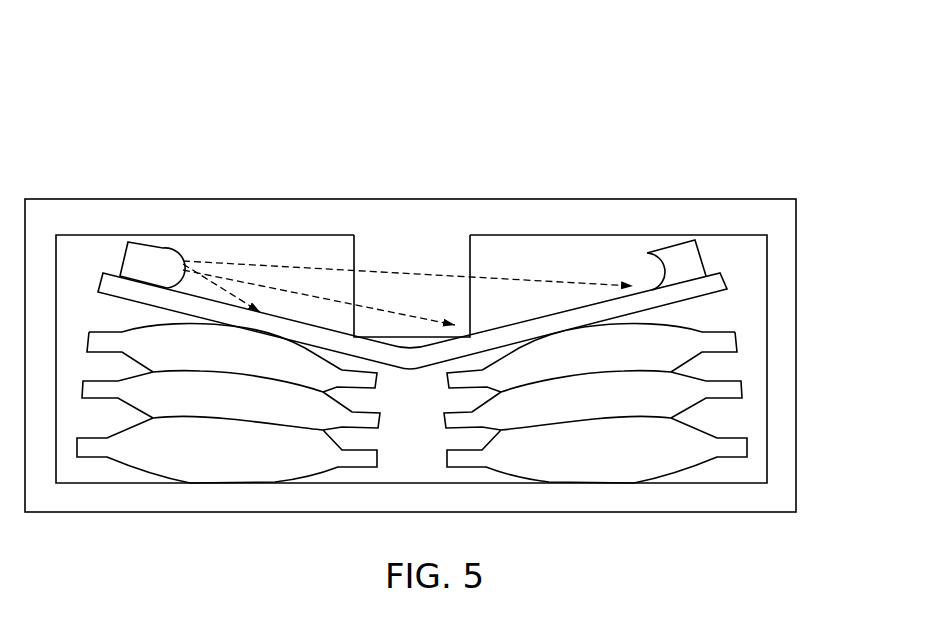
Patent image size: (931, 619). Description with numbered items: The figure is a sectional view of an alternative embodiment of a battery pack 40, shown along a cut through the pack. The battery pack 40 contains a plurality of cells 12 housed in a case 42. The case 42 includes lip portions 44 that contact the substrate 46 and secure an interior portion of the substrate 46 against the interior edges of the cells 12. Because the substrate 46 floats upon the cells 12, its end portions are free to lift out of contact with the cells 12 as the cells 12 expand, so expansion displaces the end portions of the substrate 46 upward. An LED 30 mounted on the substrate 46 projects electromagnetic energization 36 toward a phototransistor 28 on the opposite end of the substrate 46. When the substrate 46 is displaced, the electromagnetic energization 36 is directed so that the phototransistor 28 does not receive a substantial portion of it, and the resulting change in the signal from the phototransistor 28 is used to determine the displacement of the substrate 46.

The battery pack 40 is at (666, 86).
The case 42 is at (520, 212).
The lip portions 44 is at (428, 251).
The electromagnetic energization 36 is at (312, 283).
The light emitting diode 30 is at (376, 283).
The phototransistor 28 is at (676, 265).
The substrate 46 is at (407, 372).
The cells 12 is at (240, 362).